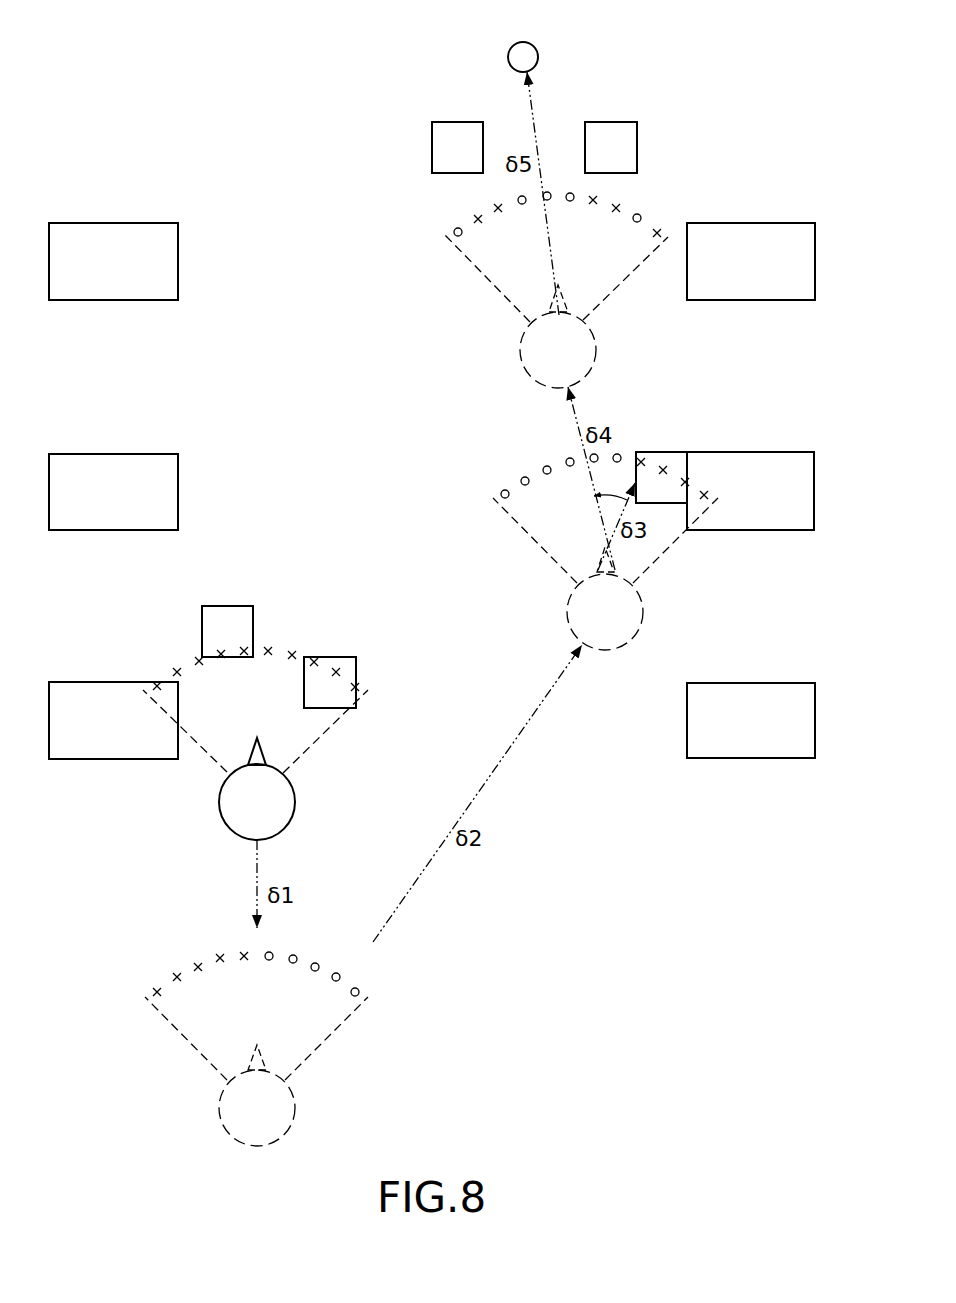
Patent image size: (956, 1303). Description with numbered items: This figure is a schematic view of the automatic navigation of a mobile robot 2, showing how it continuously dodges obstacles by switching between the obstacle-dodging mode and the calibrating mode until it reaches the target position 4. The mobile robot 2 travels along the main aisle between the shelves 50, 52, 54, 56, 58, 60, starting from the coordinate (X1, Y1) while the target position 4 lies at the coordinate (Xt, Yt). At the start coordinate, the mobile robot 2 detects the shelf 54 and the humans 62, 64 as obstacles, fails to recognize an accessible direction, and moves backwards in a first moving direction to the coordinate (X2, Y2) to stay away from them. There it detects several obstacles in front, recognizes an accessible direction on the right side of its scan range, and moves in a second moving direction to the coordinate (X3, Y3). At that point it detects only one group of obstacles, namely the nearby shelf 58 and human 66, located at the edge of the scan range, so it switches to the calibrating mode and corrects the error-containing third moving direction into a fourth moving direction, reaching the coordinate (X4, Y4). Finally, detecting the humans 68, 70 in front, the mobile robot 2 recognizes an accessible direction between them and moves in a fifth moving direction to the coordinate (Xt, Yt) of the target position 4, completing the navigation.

The mobile robot 2 is at (290, 800).
The target position 4 is at (535, 52).
The shelf 50 is at (112, 230).
The shelf 52 is at (112, 460).
The shelf 54 is at (112, 690).
The shelf 56 is at (750, 230).
The shelf 58 is at (752, 458).
The shelf 60 is at (750, 688).
The human 62 is at (228, 610).
The human 64 is at (332, 660).
The human 66 is at (662, 452).
The human 68 is at (457, 127).
The human 70 is at (610, 127).